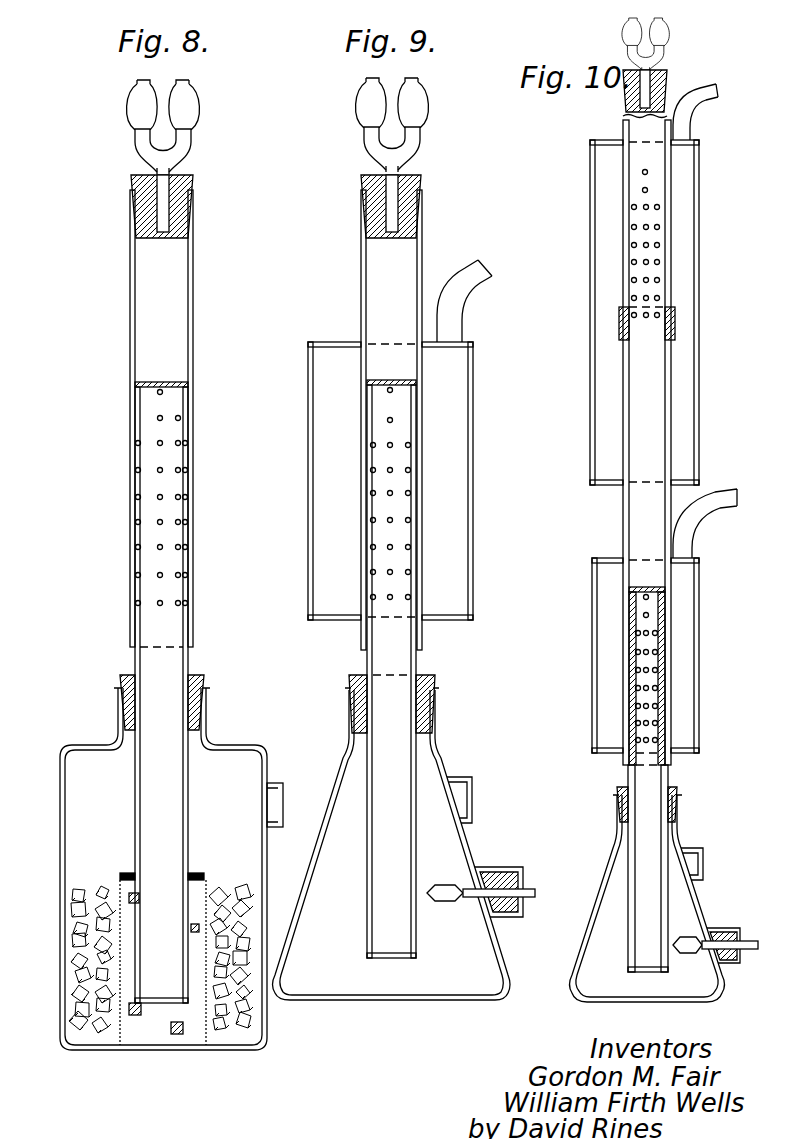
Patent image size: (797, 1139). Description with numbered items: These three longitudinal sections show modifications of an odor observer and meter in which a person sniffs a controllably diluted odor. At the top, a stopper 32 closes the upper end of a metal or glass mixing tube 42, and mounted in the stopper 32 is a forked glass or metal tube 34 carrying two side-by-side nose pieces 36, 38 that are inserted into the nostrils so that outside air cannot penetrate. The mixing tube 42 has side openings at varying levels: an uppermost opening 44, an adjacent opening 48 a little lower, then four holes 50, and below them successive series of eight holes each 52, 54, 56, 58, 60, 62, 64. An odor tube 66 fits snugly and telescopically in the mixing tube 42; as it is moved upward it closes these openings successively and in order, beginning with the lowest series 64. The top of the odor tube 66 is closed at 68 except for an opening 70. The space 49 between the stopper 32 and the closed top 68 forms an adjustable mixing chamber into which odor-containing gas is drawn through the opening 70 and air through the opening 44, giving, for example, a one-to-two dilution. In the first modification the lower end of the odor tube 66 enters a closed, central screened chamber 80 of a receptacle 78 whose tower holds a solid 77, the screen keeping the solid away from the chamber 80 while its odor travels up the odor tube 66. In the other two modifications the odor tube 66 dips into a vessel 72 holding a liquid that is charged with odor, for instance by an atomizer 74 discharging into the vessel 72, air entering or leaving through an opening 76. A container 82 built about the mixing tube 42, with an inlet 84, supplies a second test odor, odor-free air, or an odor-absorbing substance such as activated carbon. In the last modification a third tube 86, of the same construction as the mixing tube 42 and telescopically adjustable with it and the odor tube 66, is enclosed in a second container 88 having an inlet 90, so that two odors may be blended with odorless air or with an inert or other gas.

In FIG. 8, the stopper 32 is at (131, 182).
In FIG. 9, the stopper 32 is at (362, 182).
In FIG. 10, the stopper 32 is at (668, 78).
In FIG. 8, the forked tube 34 is at (140, 152).
In FIG. 9, the forked tube 34 is at (372, 150).
In FIG. 10, the forked tube 34 is at (652, 60).
In FIG. 8, the nose piece 36 is at (190, 87).
In FIG. 9, the nose piece 36 is at (420, 86).
In FIG. 10, the nose piece 36 is at (668, 24).
In FIG. 8, the nose piece 38 is at (133, 87).
In FIG. 9, the nose piece 38 is at (362, 86).
In FIG. 10, the nose piece 38 is at (622, 24).
In FIG. 8, the mixing tube 42 is at (130, 318).
In FIG. 9, the mixing tube 42 is at (361, 280).
In FIG. 8, the uppermost opening 44 is at (193, 361).
In FIG. 9, the uppermost opening 44 is at (416, 378).
In FIG. 10, the uppermost opening 44 is at (672, 158).
In FIG. 8, the opening 48 is at (165, 391).
In FIG. 9, the opening 48 is at (385, 390).
In FIG. 10, the opening 48 is at (640, 170).
In FIG. 8, the adjustable mixing chamber 49 is at (172, 292).
In FIG. 9, the adjustable mixing chamber 49 is at (400, 270).
In FIG. 8, the holes 50 is at (182, 416).
In FIG. 9, the holes 50 is at (395, 420).
In FIG. 10, the holes 50 is at (640, 190).
In FIG. 8, the series of holes 52 is at (135, 443).
In FIG. 9, the series of holes 52 is at (370, 442).
In FIG. 10, the series of holes 52 is at (660, 212).
In FIG. 8, the series of holes 54 is at (135, 470).
In FIG. 9, the series of holes 54 is at (412, 470).
In FIG. 10, the series of holes 54 is at (634, 227).
In FIG. 8, the series of holes 56 is at (135, 496).
In FIG. 9, the series of holes 56 is at (370, 493).
In FIG. 10, the series of holes 56 is at (660, 245).
In FIG. 8, the series of holes 58 is at (135, 522).
In FIG. 9, the series of holes 58 is at (412, 522).
In FIG. 10, the series of holes 58 is at (634, 262).
In FIG. 8, the series of holes 60 is at (135, 547).
In FIG. 9, the series of holes 60 is at (370, 547).
In FIG. 10, the series of holes 60 is at (660, 280).
In FIG. 8, the series of holes 62 is at (135, 575).
In FIG. 9, the series of holes 62 is at (412, 572).
In FIG. 10, the series of holes 62 is at (634, 298).
In FIG. 8, the series of holes 64 is at (135, 603).
In FIG. 9, the series of holes 64 is at (370, 597).
In FIG. 10, the series of holes 64 is at (634, 318).
In FIG. 8, the odor tube 66 is at (175, 660).
In FIG. 9, the odor tube 66 is at (375, 657).
In FIG. 10, the odor tube 66 is at (638, 843).
In FIG. 8, the closed top end 68 is at (187, 380).
In FIG. 9, the closed top end 68 is at (370, 378).
In FIG. 10, the closed top end 68 is at (628, 587).
In FIG. 8, the opening 70 is at (140, 380).
In FIG. 9, the opening 70 is at (405, 378).
In FIG. 10, the opening 70 is at (648, 585).
In FIG. 9, the vessel 72 is at (358, 1002).
In FIG. 10, the vessel 72 is at (585, 1000).
In FIG. 9, the atomizer 74 is at (535, 890).
In FIG. 10, the atomizer 74 is at (750, 932).
In FIG. 8, the opening 76 is at (283, 803).
In FIG. 9, the opening 76 is at (472, 803).
In FIG. 10, the opening 76 is at (703, 862).
In FIG. 8, the solid 77 is at (90, 882).
In FIG. 8, the receptacle 78 is at (60, 785).
In FIG. 8, the screened chamber 80 is at (168, 1040).
In FIG. 9, the container 82 is at (473, 497).
In FIG. 10, the container 82 is at (699, 750).
In FIG. 9, the inlet 84 is at (485, 290).
In FIG. 10, the inlet 84 is at (738, 492).
In FIG. 10, the third tube 86 is at (671, 195).
In FIG. 10, the second container 88 is at (676, 318).
In FIG. 10, the inlet 90 is at (716, 100).